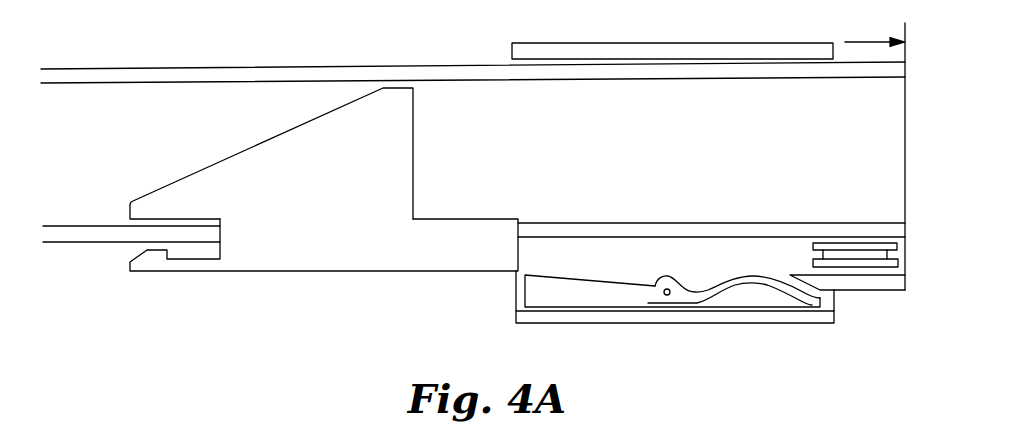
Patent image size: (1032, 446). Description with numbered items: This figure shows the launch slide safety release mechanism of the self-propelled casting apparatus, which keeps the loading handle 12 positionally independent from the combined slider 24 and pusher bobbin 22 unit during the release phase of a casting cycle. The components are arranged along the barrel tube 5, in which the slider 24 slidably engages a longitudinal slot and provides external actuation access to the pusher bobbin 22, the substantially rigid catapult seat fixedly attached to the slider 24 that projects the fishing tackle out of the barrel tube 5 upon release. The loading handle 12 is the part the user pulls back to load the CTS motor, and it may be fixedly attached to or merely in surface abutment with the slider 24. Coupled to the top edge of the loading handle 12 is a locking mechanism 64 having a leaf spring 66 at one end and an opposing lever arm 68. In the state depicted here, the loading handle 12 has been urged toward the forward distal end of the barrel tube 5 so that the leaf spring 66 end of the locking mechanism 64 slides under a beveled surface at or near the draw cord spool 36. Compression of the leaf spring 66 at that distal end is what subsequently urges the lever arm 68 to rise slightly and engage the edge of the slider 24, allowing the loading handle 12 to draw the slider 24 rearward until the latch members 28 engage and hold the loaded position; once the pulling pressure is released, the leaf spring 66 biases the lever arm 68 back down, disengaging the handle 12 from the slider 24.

The barrel tube 5 is at (212, 66).
The loading handle 12 is at (513, 325).
The pusher bobbin 22 is at (414, 129).
The slider member 24 is at (507, 218).
The latch member 28 is at (131, 261).
The draw cord spool 36 is at (863, 264).
The locking mechanism 64 is at (690, 259).
The leaf spring 66 is at (753, 275).
The lever arm 68 is at (590, 282).